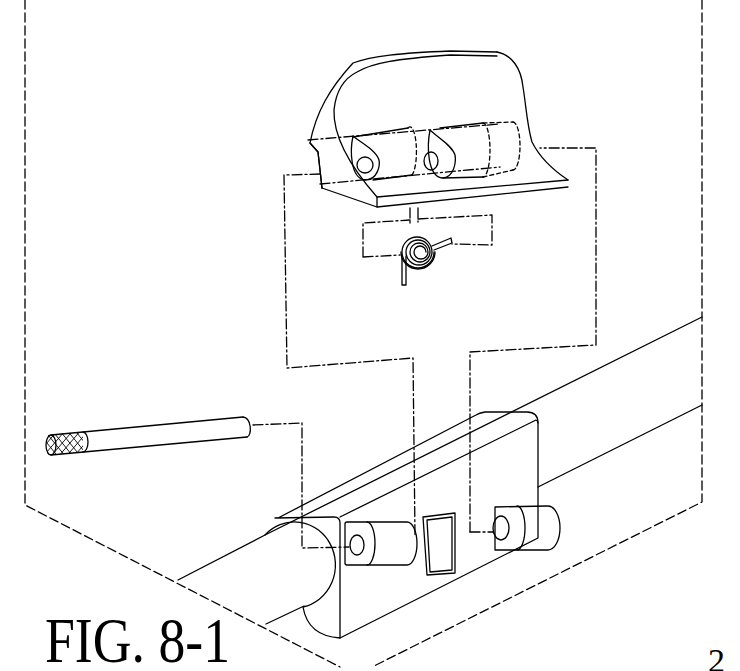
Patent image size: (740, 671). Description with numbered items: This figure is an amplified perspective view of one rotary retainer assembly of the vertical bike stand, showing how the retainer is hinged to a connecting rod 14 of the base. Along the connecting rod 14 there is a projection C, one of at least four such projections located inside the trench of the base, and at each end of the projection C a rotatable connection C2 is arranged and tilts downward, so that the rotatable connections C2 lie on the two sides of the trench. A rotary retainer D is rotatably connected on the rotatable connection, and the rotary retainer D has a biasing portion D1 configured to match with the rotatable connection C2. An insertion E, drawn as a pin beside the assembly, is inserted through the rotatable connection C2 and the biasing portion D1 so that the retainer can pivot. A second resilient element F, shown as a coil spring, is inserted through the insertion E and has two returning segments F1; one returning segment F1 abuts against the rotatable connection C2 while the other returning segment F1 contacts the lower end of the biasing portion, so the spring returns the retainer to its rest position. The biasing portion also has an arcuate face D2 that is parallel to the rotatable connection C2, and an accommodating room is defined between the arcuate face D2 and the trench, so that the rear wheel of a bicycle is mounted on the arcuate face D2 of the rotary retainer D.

The connecting rod 14 is at (650, 362).
The projection C is at (278, 518).
The rotatable connection C2 is at (378, 527).
The rotary retainer D is at (328, 97).
The biasing portion D1 is at (320, 155).
The arcuate face D2 is at (507, 97).
The insertion E is at (118, 437).
The second resilient element F is at (423, 263).
The returning segment F1 is at (398, 273).